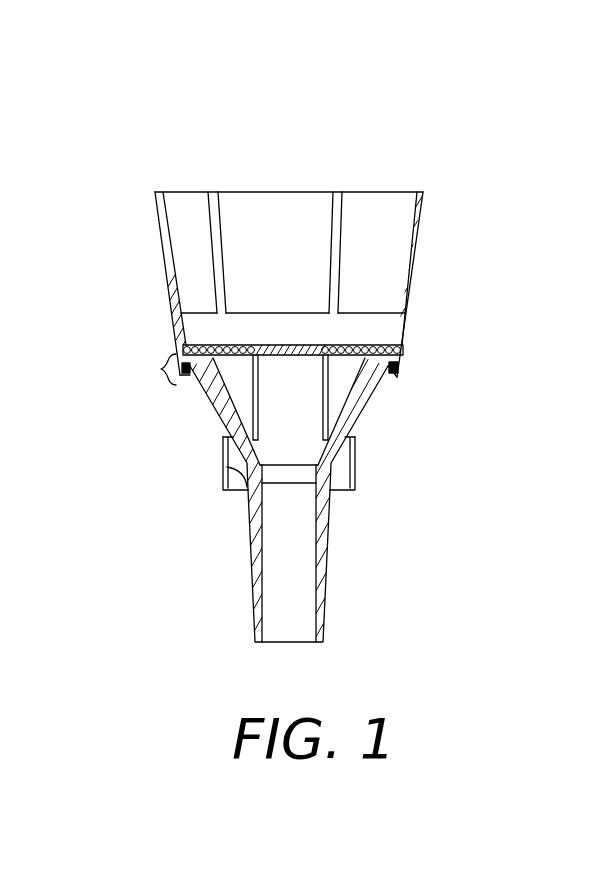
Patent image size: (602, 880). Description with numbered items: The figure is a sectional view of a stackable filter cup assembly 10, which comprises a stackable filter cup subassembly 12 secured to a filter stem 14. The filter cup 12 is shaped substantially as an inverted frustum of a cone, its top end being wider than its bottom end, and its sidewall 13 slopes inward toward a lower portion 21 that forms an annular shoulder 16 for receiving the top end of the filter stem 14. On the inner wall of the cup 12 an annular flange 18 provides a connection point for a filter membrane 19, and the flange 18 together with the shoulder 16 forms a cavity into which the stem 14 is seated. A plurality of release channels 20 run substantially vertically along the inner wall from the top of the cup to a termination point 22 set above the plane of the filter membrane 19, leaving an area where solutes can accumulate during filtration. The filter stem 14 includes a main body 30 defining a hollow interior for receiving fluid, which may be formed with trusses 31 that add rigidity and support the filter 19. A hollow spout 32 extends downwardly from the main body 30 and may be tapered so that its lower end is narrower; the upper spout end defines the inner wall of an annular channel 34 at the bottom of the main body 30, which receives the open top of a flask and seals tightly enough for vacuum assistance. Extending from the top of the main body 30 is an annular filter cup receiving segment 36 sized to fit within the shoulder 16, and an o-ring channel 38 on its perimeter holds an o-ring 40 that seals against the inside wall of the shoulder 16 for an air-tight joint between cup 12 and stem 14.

The stackable filter cup assembly 10 is at (301, 357).
The stackable filter cup subassembly 12 is at (428, 238).
The container side wall 13 is at (158, 238).
The filter stem 14 is at (374, 421).
The annular shoulder 16 is at (400, 370).
The annular flange 18 is at (183, 348).
The filter membrane 19 is at (357, 345).
The release channels 20 is at (332, 240).
The lower portion of sidewall 21 is at (160, 377).
The termination point 22 is at (205, 312).
The main body 30 is at (362, 465).
The trusses 31 is at (247, 385).
The spout 32 is at (330, 572).
The annular channel 34 is at (248, 488).
The filter cup receiving segment 36 is at (394, 377).
The o-ring channel 38 is at (195, 385).
The o-ring 40 is at (398, 365).